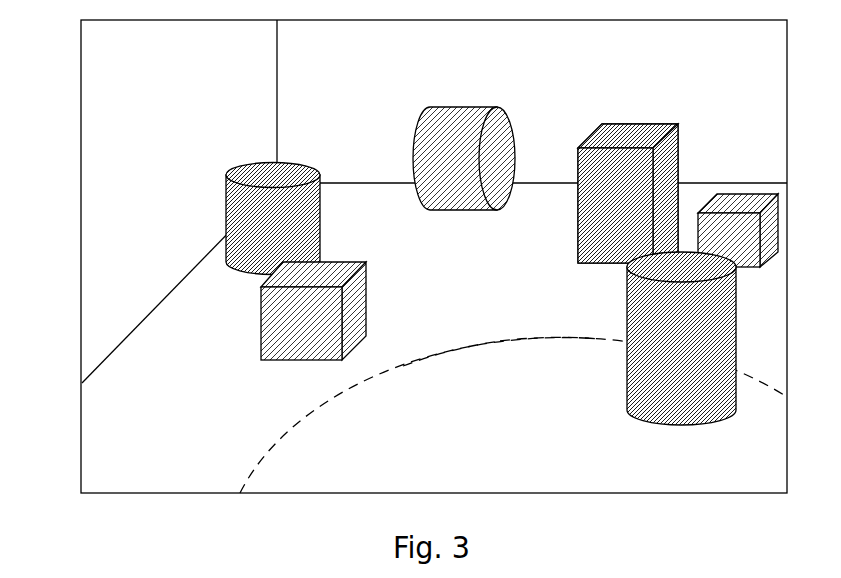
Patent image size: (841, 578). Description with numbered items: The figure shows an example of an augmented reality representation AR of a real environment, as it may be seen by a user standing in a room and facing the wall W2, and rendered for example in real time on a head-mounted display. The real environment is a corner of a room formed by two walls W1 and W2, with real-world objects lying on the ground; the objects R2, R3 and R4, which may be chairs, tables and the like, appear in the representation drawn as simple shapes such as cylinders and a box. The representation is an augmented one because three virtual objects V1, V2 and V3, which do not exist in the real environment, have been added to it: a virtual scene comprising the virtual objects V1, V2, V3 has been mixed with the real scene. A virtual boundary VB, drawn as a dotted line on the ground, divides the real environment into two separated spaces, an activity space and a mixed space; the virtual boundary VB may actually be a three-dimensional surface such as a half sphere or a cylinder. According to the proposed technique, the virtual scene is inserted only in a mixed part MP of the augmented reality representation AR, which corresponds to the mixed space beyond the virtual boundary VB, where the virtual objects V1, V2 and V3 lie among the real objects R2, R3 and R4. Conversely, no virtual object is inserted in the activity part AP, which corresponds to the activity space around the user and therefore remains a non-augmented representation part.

The augmented reality representation AR is at (80, 90).
The wall W1 is at (215, 103).
The wall W2 is at (318, 103).
The object R2 is at (681, 338).
The object R3 is at (273, 219).
The object R4 is at (628, 193).
The virtual object V1 is at (313, 311).
The virtual object V2 is at (464, 158).
The virtual object V3 is at (738, 230).
The mixed part MP is at (457, 322).
The activity part AP is at (543, 355).
The virtual boundary VB is at (270, 443).